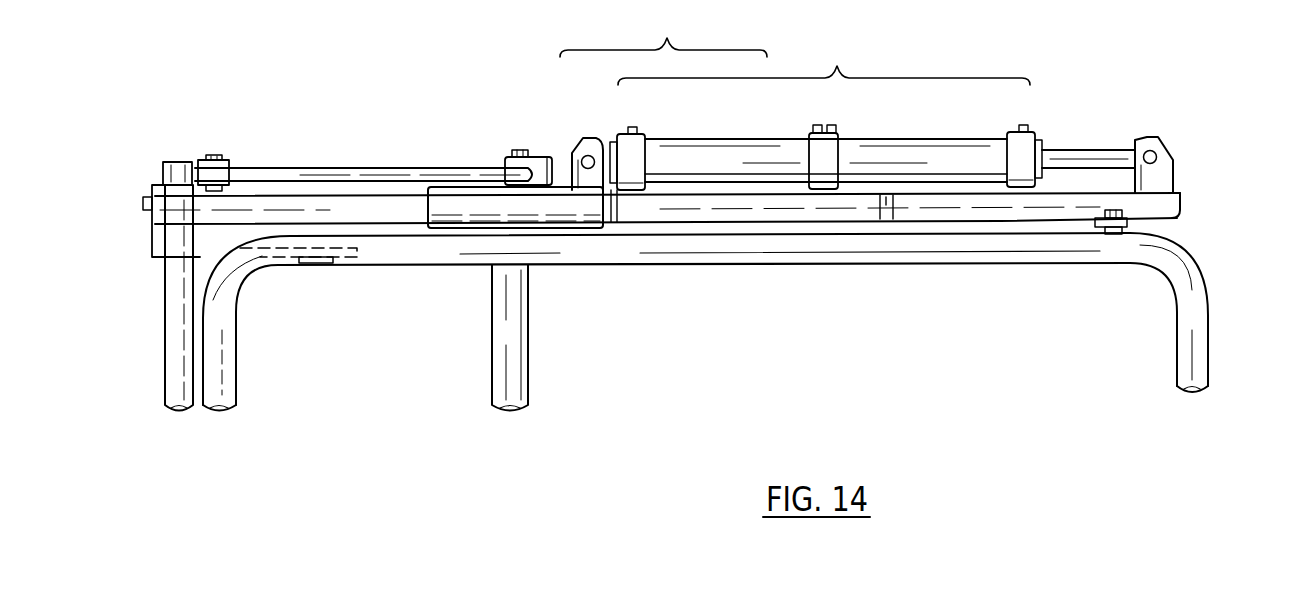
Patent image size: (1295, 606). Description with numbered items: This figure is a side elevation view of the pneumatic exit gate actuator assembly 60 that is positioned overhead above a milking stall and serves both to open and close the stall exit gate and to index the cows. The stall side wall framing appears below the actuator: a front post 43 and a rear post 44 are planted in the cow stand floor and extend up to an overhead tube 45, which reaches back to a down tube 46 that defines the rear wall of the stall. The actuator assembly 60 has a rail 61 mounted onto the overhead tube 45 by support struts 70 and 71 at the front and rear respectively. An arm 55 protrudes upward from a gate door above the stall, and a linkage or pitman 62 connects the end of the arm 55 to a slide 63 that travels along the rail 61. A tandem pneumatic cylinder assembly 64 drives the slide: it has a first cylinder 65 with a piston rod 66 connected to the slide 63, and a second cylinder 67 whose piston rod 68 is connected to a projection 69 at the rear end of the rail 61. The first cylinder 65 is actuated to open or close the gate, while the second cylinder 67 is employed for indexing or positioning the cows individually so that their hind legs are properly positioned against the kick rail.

The front post 43 is at (222, 387).
The rear post 44 is at (524, 386).
The overhead tube 45 is at (846, 256).
The down tube 46 is at (1210, 349).
The arm 55 is at (168, 350).
The exit gate actuator assembly 60 is at (663, 31).
The rail 61 is at (786, 210).
The pitman 62 is at (378, 177).
The slide 63 is at (560, 187).
The tandem pneumatic cylinder assembly 64 is at (824, 60).
The first cylinder 65 is at (740, 140).
The piston rod 66 is at (615, 226).
The second cylinder 67 is at (930, 140).
The piston rod 68 is at (1090, 150).
The projection 69 is at (1165, 170).
The support strut 70 is at (320, 263).
The support strut 71 is at (1113, 236).